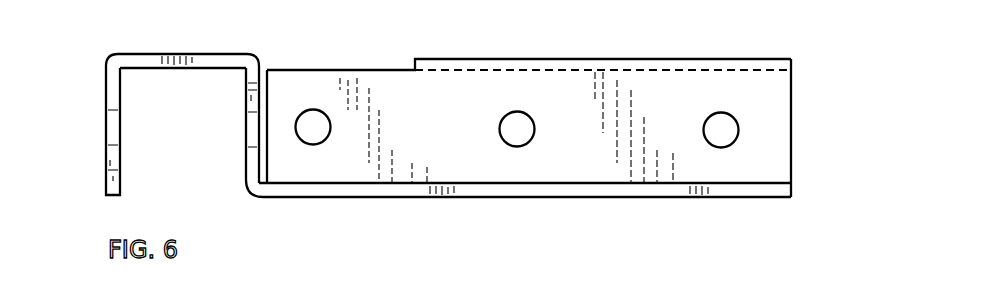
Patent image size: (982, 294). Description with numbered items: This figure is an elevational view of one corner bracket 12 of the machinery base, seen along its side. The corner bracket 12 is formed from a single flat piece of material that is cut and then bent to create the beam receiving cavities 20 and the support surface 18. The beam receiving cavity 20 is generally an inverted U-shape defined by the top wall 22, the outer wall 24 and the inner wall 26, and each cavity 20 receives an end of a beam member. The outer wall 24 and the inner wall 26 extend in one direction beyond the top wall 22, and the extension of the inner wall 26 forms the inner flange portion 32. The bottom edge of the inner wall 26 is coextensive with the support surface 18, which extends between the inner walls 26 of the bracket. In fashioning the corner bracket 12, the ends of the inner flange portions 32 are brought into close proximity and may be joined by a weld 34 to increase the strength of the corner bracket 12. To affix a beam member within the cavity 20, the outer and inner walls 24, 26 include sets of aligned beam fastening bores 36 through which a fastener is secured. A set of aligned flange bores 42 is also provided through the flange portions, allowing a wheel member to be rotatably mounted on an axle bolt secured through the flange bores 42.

The corner bracket 12 is at (827, 27).
The support surface 18 is at (757, 179).
The beam receiving cavity 20 is at (164, 132).
The top wall 22 is at (162, 62).
The outer wall 24 is at (107, 98).
The inner wall 26 is at (253, 167).
The inner flange portion 32 is at (388, 172).
The weld 34 is at (263, 98).
The beam fastening bore 36 is at (506, 142).
The flange bore 42 is at (307, 143).